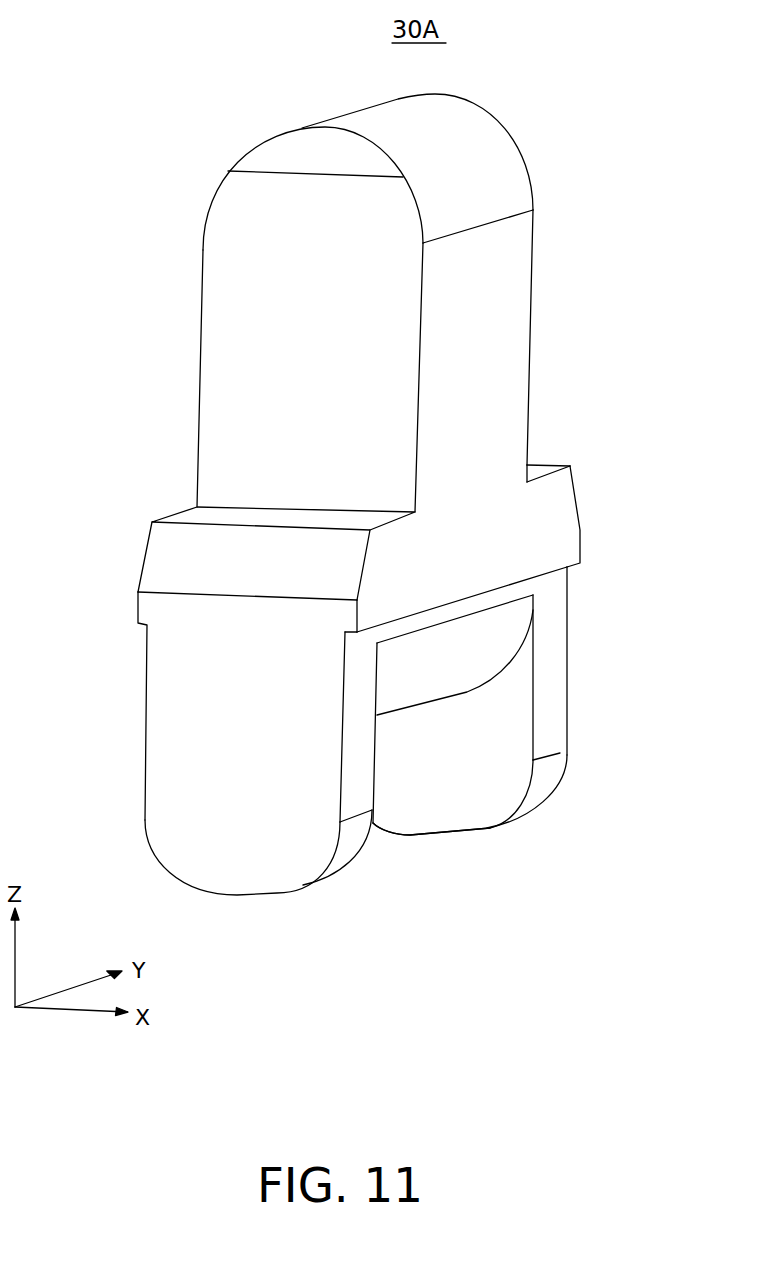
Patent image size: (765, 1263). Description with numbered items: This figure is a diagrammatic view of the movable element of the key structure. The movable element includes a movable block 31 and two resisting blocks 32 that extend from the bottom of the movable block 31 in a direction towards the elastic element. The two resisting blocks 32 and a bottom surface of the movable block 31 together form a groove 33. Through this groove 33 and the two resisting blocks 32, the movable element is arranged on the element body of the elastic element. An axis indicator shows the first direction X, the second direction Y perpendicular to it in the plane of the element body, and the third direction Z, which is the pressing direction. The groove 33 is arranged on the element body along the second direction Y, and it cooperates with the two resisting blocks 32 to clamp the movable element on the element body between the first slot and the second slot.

The movable block 31 is at (498, 332).
The resisting blocks 32 is at (190, 772).
The groove 33 is at (415, 813).